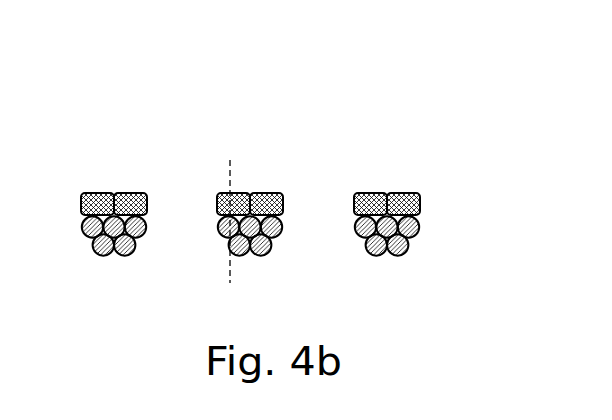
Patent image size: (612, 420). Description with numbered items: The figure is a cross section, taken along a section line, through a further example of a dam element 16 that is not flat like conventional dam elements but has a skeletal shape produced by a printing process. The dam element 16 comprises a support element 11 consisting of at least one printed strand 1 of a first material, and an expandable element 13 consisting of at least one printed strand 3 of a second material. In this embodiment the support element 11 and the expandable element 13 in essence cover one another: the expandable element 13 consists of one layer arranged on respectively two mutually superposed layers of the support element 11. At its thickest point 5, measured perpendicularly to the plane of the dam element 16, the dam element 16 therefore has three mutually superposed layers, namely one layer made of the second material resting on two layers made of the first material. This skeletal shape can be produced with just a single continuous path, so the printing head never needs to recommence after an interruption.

The printed strand of a first material 1 is at (116, 258).
The printed strand of a second material 3 is at (98, 190).
The thickest point 5 is at (230, 260).
The support element 11 is at (262, 252).
The expandable element 13 is at (238, 198).
The dam element 16 is at (288, 132).